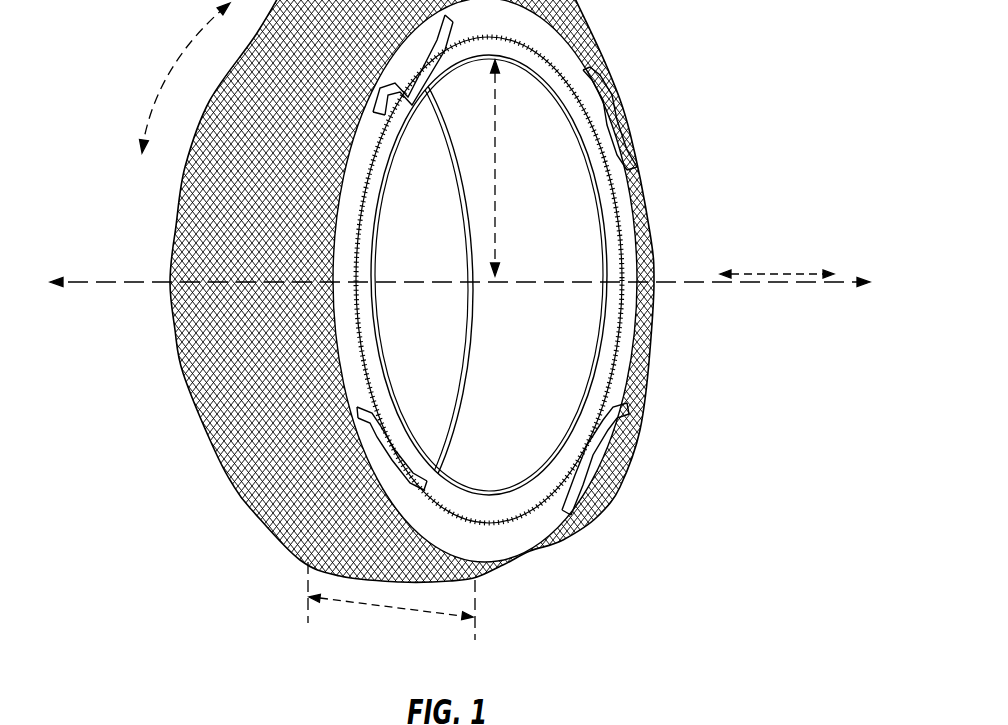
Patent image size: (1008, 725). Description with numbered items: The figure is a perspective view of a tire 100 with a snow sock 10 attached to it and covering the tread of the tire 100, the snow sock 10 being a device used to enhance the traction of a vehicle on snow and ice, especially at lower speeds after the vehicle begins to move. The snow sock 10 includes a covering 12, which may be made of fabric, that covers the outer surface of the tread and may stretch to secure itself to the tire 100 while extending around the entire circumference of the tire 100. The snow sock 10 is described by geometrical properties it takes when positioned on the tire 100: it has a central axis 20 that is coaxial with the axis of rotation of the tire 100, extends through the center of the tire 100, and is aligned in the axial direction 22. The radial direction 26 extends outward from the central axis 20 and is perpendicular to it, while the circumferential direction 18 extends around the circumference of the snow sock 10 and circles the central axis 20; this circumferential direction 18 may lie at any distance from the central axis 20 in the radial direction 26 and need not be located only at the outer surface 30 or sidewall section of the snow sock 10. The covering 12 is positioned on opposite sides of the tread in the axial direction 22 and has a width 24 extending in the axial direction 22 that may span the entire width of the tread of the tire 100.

The snow sock 10 is at (395, 297).
The covering 12 is at (237, 440).
The circumferential direction 18 is at (187, 50).
The central axis 20 is at (687, 284).
The axial direction 22 is at (763, 273).
The width 24 is at (392, 610).
The radial direction 26 is at (497, 202).
The outer surface 30 is at (264, 521).
The tire 100 is at (530, 492).